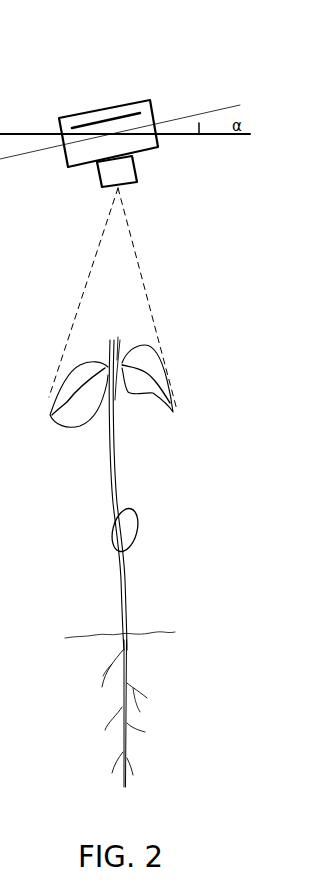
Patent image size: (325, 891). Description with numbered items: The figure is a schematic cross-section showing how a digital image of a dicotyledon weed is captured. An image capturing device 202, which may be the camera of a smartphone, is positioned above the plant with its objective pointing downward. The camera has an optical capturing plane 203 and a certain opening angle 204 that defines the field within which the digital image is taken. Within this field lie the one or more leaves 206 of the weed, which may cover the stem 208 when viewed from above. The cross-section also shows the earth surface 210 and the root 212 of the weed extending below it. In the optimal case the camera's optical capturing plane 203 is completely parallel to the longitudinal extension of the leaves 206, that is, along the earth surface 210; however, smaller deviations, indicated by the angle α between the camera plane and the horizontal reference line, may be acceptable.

The image capturing device 202 is at (72, 87).
The optical capturing plane 203 is at (147, 123).
The opening angle 204 is at (158, 279).
The leaves 206 is at (188, 396).
The stem 208 is at (148, 479).
The earth surface 210 is at (191, 630).
The root 212 is at (170, 724).